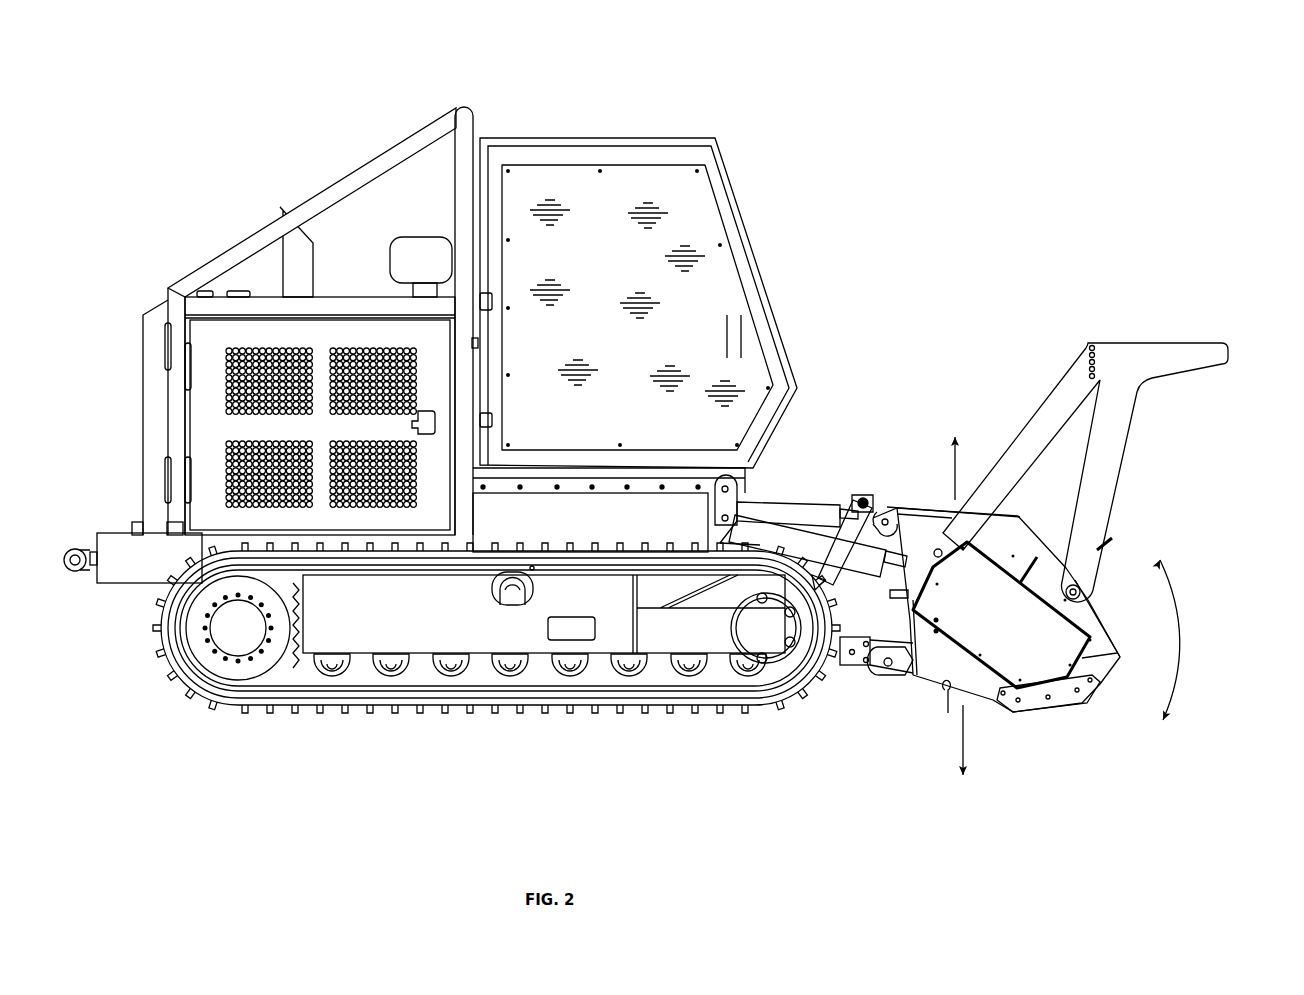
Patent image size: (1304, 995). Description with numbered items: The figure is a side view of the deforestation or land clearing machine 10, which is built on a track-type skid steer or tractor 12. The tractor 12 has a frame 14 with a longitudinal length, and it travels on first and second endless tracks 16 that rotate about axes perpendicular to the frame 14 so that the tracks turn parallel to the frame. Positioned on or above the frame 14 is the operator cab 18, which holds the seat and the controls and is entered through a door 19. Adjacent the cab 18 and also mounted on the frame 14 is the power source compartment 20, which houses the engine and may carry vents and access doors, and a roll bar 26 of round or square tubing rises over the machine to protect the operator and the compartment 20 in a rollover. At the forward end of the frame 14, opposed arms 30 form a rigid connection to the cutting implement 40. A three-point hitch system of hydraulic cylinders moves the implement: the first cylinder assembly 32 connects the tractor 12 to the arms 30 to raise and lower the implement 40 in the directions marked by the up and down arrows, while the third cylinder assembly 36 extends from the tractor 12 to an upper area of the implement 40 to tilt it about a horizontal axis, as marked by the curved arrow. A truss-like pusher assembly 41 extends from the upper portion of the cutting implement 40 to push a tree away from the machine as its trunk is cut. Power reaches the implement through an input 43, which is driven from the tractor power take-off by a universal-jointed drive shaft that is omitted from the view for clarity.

The land clearing machine 10 is at (898, 125).
The tractor 12 is at (95, 188).
The frame 14 is at (122, 567).
The endless tracks 16 is at (692, 710).
The cab 18 is at (593, 122).
The door 19 is at (683, 153).
The power source compartment 20 is at (115, 393).
The roll bar 26 is at (378, 165).
The arms 30 is at (852, 668).
The first cylinder assembly 32 is at (745, 540).
The third hydraulic cylinder assembly 36 is at (818, 507).
The cutting implement 40 is at (1205, 480).
The pusher assembly 41 is at (1147, 342).
The input 43 is at (893, 597).